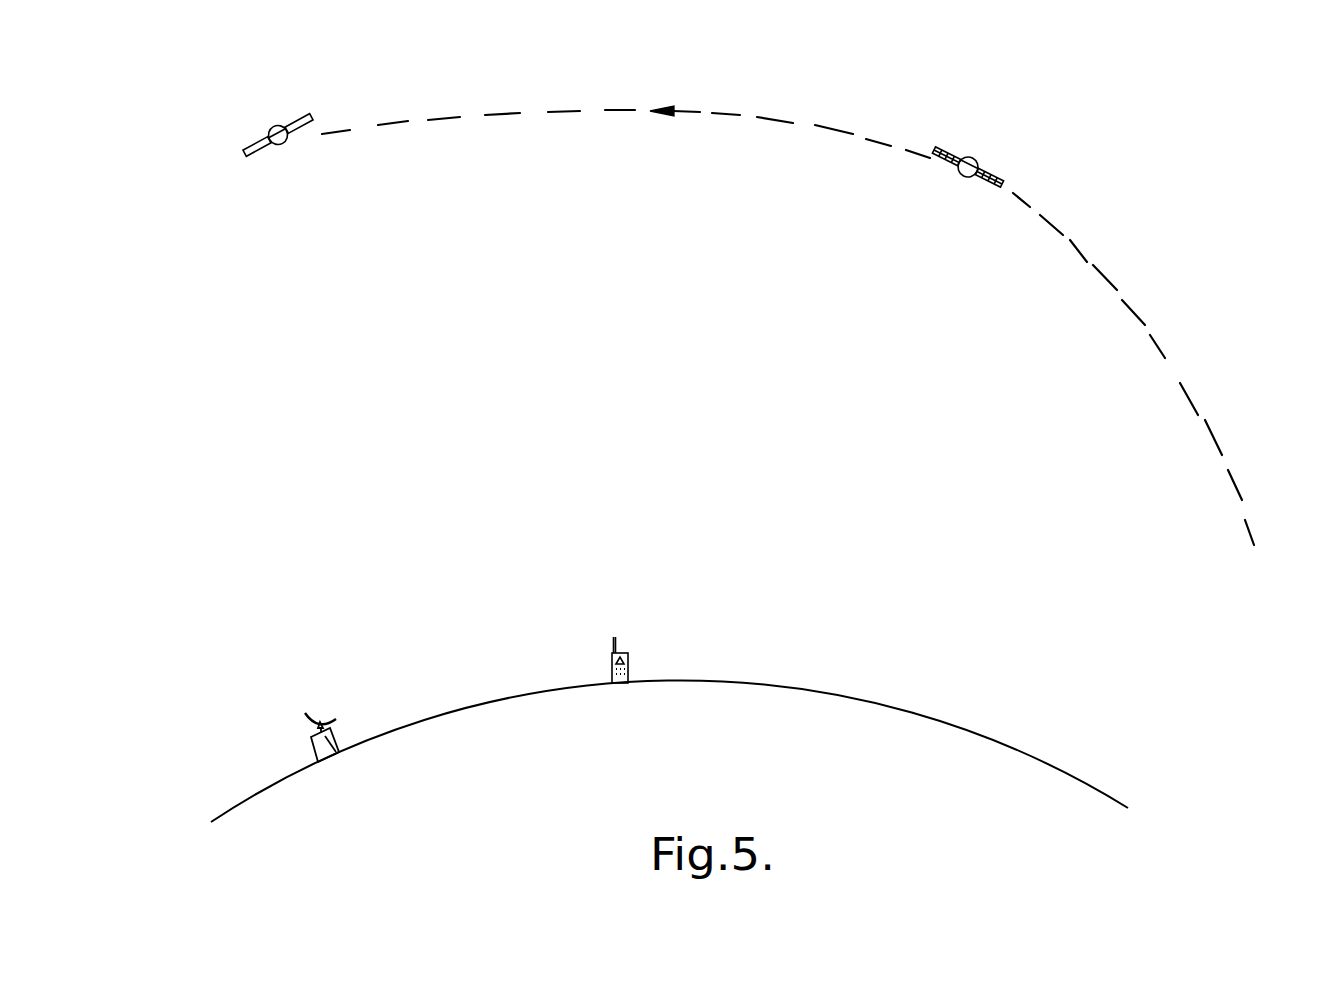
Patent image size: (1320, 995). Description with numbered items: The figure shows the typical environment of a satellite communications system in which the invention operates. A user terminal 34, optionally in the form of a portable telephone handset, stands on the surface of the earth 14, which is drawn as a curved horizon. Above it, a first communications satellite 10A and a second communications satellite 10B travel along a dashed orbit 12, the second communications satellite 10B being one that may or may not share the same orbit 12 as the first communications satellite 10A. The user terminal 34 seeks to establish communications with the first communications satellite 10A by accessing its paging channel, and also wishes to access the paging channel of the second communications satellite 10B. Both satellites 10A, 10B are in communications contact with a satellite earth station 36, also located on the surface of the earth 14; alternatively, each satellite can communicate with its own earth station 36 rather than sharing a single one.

The first communications satellite 10A is at (280, 125).
The second communications satellite 10B is at (979, 160).
The orbit 12 is at (740, 115).
The surface of the earth 14 is at (947, 723).
The user terminal 34 is at (629, 677).
The satellite earth station 36 is at (340, 750).